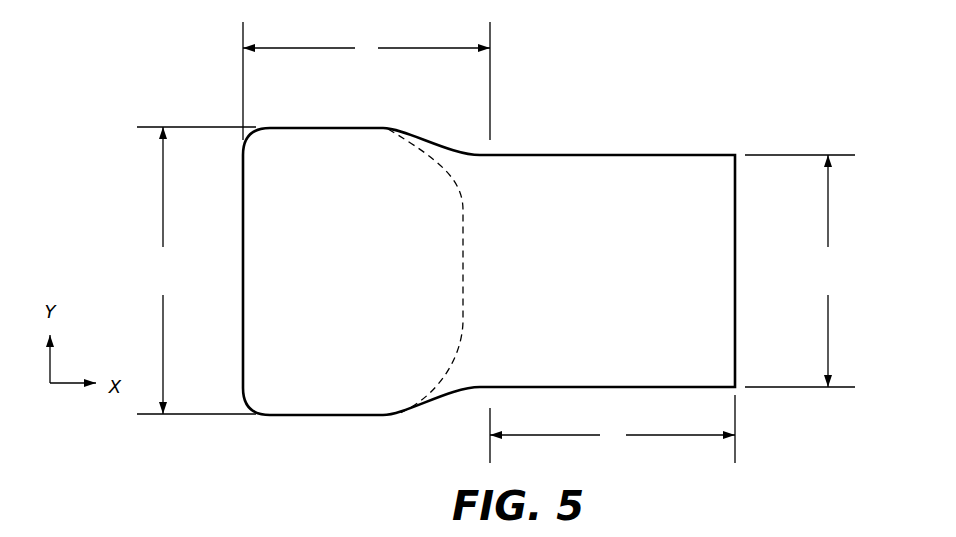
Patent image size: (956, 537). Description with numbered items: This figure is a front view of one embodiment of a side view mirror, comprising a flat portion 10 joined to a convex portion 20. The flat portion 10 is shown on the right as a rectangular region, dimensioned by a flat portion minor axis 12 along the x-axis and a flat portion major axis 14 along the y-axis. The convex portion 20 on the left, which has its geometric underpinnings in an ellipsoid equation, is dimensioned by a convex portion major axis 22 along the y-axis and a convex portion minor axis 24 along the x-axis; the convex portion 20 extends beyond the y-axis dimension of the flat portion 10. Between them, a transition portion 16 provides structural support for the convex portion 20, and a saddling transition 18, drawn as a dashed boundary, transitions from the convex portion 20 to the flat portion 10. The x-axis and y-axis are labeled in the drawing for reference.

The flat portion 10 is at (611, 288).
The flat portion minor axis 12 is at (612, 429).
The flat portion major axis 14 is at (800, 271).
The transition portion 16 is at (460, 148).
The saddling transition 18 is at (465, 237).
The convex portion 20 is at (357, 288).
The convex portion major axis 22 is at (196, 270).
The convex portion minor axis 24 is at (366, 81).